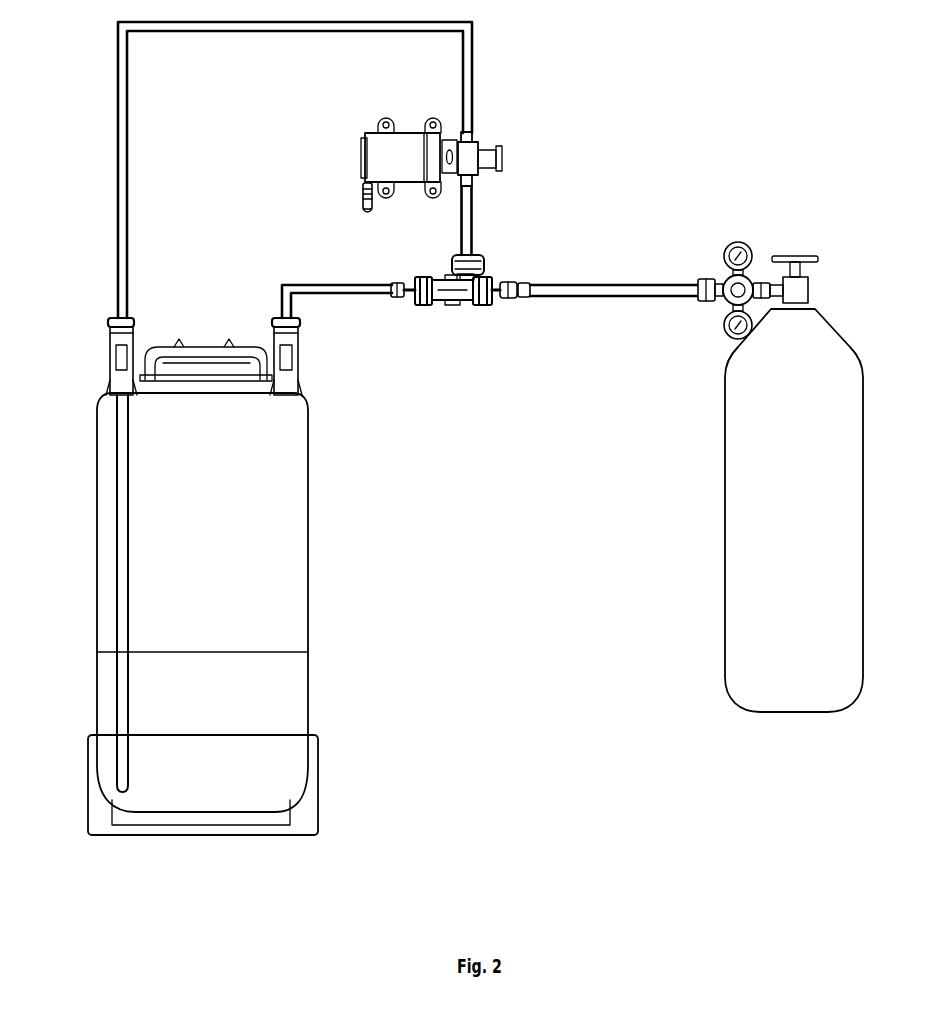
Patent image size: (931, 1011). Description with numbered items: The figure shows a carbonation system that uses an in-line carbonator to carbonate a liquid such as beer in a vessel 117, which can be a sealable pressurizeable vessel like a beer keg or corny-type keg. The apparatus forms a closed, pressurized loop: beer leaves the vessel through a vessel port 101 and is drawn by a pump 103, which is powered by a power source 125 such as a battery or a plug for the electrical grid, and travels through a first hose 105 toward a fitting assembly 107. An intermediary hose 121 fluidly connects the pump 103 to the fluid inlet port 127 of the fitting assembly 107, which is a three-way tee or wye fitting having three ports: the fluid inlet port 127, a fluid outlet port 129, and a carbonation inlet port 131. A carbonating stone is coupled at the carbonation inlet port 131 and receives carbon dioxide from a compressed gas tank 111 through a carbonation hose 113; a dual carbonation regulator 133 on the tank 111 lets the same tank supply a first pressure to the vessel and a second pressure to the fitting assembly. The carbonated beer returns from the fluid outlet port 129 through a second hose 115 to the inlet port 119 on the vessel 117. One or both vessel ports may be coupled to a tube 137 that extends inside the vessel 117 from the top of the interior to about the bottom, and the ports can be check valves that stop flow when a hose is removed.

The vessel port 101 is at (132, 325).
The pump 103 is at (370, 163).
The first hose 105 is at (128, 253).
The fitting assembly 107 is at (458, 301).
The carbon dioxide tank 111 is at (743, 502).
The carbonation hose 113 is at (590, 297).
The second hose 115 is at (305, 294).
The vessel 117 is at (310, 522).
The inlet port 119 is at (292, 333).
The intermediary hose 121 is at (473, 215).
The power source 125 is at (363, 207).
The fluid inlet port 127 is at (482, 262).
The fluid outlet port 129 is at (427, 305).
The carbonation inlet port 131 is at (490, 305).
The dual carbonation regulator 133 is at (725, 278).
The tube 137 is at (120, 555).